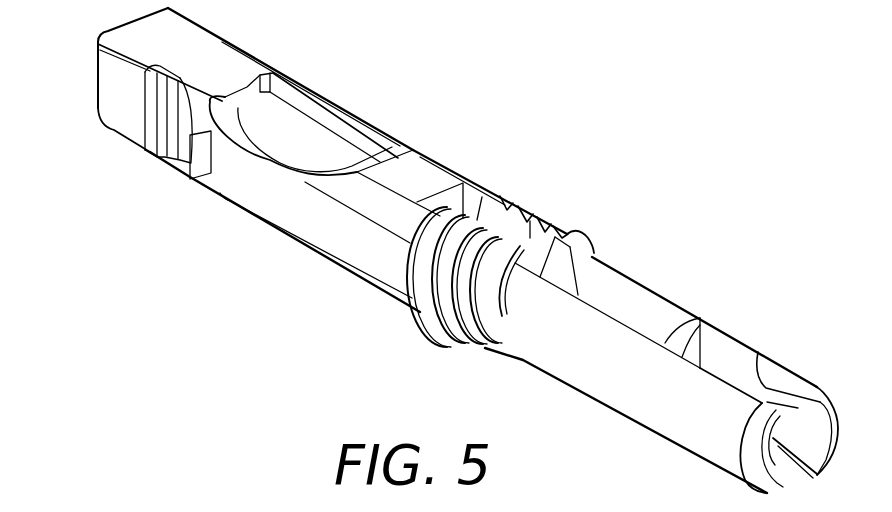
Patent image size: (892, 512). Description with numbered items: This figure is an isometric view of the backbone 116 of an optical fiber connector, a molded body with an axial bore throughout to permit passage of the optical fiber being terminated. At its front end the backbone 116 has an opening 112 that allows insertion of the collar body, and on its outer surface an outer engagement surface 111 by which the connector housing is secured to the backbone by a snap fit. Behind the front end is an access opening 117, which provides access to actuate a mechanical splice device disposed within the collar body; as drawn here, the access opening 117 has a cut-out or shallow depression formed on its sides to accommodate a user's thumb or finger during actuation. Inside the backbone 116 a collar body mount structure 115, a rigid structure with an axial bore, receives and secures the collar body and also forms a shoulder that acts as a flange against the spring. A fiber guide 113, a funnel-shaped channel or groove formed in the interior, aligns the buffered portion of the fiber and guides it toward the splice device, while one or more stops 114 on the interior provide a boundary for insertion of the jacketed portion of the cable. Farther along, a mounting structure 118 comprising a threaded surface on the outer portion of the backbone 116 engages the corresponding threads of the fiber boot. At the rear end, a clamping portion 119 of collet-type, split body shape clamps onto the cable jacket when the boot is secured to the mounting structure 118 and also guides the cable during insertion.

The outer engagement surface 111 is at (146, 124).
The opening 112 is at (99, 72).
The fiber guide 113 is at (530, 238).
The stop 114 is at (682, 330).
The collar body mount structure 115 is at (425, 178).
The backbone 116 is at (284, 241).
The access opening 117 is at (317, 142).
The mounting structure 118 is at (450, 318).
The clamping portion 119 is at (782, 378).